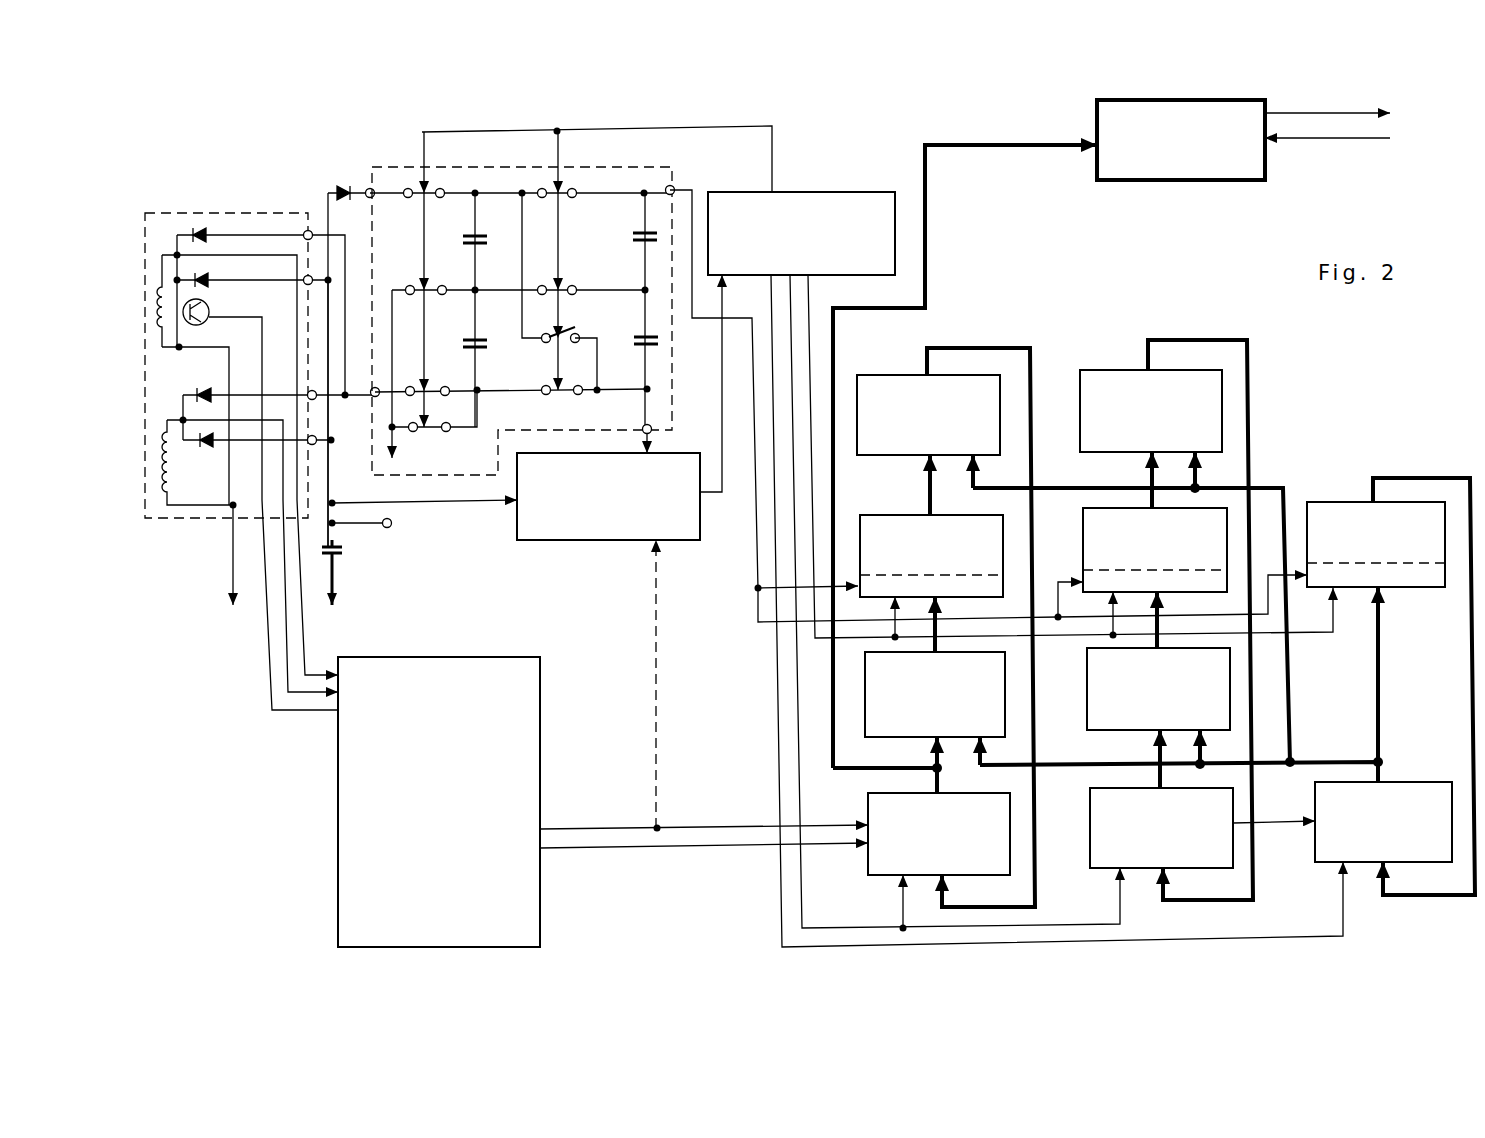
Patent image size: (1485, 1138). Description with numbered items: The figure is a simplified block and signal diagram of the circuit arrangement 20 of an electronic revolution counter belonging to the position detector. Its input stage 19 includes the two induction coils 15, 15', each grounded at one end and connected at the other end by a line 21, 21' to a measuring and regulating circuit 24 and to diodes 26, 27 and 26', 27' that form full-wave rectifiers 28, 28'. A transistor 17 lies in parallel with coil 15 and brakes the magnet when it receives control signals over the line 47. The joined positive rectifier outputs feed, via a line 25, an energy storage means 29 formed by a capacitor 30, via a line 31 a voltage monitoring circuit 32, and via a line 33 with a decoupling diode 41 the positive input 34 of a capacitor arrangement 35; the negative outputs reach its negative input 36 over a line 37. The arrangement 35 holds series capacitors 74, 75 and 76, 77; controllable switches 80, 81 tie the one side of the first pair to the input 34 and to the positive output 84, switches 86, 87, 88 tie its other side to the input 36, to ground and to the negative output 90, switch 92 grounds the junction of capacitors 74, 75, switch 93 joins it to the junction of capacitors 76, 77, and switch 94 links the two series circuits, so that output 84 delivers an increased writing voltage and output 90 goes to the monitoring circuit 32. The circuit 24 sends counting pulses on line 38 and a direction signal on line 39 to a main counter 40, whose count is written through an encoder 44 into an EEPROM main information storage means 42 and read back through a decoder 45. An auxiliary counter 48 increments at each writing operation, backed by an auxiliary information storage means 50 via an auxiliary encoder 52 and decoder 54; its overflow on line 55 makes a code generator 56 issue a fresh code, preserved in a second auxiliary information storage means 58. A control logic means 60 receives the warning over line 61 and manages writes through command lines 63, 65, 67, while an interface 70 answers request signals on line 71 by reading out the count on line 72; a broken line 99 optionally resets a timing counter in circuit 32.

The induction coil 15 is at (219, 338).
The induction coil 15' is at (199, 497).
The transistor 17 is at (207, 328).
The input stage 19 is at (172, 213).
The circuit arrangement 20 is at (860, 114).
The line 21 is at (338, 587).
The line 21' is at (237, 579).
The measuring and regulating circuit 24 is at (338, 860).
The line 25 is at (336, 503).
The diode 26 is at (245, 195).
The diode 26' is at (266, 402).
The diode 27 is at (254, 292).
The diode 27' is at (259, 465).
The full-wave rectifier 28 is at (229, 312).
The full-wave rectifier 28' is at (232, 411).
The energy storage means 29 is at (365, 548).
The capacitor 30 is at (344, 572).
The line 31 is at (480, 503).
The voltage monitoring circuit 32 is at (571, 540).
The line 33 is at (328, 205).
The positive input 34 is at (370, 188).
The capacitor arrangement 35 is at (474, 132).
The negative input 36 is at (375, 388).
The line 37 is at (348, 414).
The line 38 is at (600, 828).
The line 39 is at (600, 848).
The main counter 40 is at (868, 875).
The decoupling diode 41 is at (343, 185).
The main information storage means 42 is at (900, 515).
The encoder 44 is at (865, 715).
The decoder 45 is at (895, 375).
The line 47 is at (268, 683).
The auxiliary counter 48 is at (1100, 868).
The auxiliary information storage means 50 is at (1083, 550).
The auxiliary encoder 52 is at (1087, 710).
The auxiliary decoder 54 is at (1105, 370).
The line 55 is at (1284, 823).
The code generator 56 is at (1395, 782).
The second auxiliary information storage means 58 is at (1320, 502).
The control logic means 60 is at (800, 192).
The line 61 is at (723, 478).
The command line 63 is at (808, 552).
The command line 65 is at (797, 662).
The command line 67 is at (782, 713).
The interface 70 is at (1193, 180).
The line 71 is at (1336, 140).
The line 72 is at (1327, 112).
The capacitor 74 is at (480, 240).
The capacitor 75 is at (480, 345).
The capacitor 76 is at (640, 240).
The capacitor 77 is at (640, 343).
The controllable switch 80 is at (422, 185).
The controllable switch 81 is at (565, 200).
The positive output 84 is at (676, 188).
The controllable switch 86 is at (421, 385).
The controllable switch 87 is at (433, 440).
The controllable switch 88 is at (556, 402).
The negative output 90 is at (654, 426).
The controllable switch 92 is at (420, 283).
The controllable switch 93 is at (557, 283).
The controllable switch 94 is at (560, 342).
The line 99 is at (655, 702).